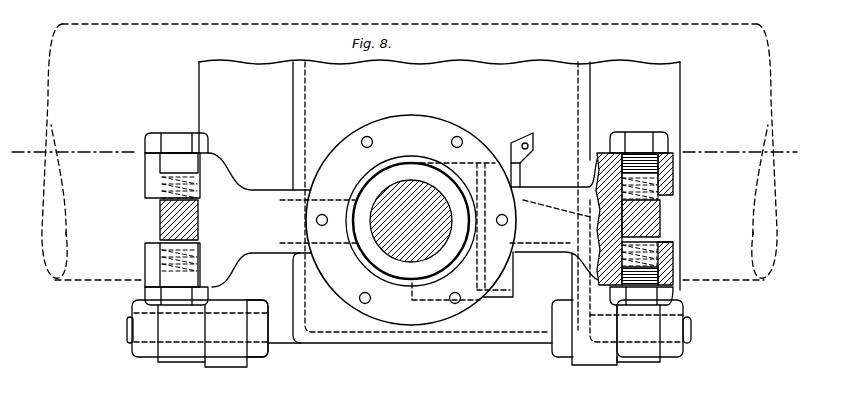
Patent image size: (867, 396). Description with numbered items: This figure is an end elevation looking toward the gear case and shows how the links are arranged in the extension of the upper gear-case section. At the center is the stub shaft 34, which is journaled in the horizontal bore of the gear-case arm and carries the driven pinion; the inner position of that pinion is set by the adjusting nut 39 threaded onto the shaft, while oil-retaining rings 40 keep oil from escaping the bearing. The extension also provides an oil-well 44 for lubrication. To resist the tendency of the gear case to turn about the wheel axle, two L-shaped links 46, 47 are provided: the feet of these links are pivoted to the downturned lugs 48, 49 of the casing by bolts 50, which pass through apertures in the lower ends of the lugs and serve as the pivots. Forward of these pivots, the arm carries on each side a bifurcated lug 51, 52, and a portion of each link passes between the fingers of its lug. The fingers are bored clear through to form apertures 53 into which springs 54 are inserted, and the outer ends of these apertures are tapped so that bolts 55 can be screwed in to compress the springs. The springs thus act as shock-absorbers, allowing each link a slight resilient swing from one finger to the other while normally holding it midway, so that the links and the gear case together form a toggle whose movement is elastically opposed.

The stub shaft 34 is at (411, 221).
The adjusting nut 39 is at (398, 268).
The oil-retaining rings 40 is at (416, 165).
The oil-well 44 is at (516, 266).
The link 46 is at (661, 219).
The link 47 is at (160, 220).
The downturned lug 48 is at (596, 365).
The downturned lug 49 is at (223, 360).
The bolt 50 is at (257, 308).
The bifurcated lug 51 is at (611, 219).
The bifurcated lug 52 is at (258, 248).
The aperture 53 is at (166, 183).
The spring 54 is at (166, 258).
The bolt 55 is at (173, 140).